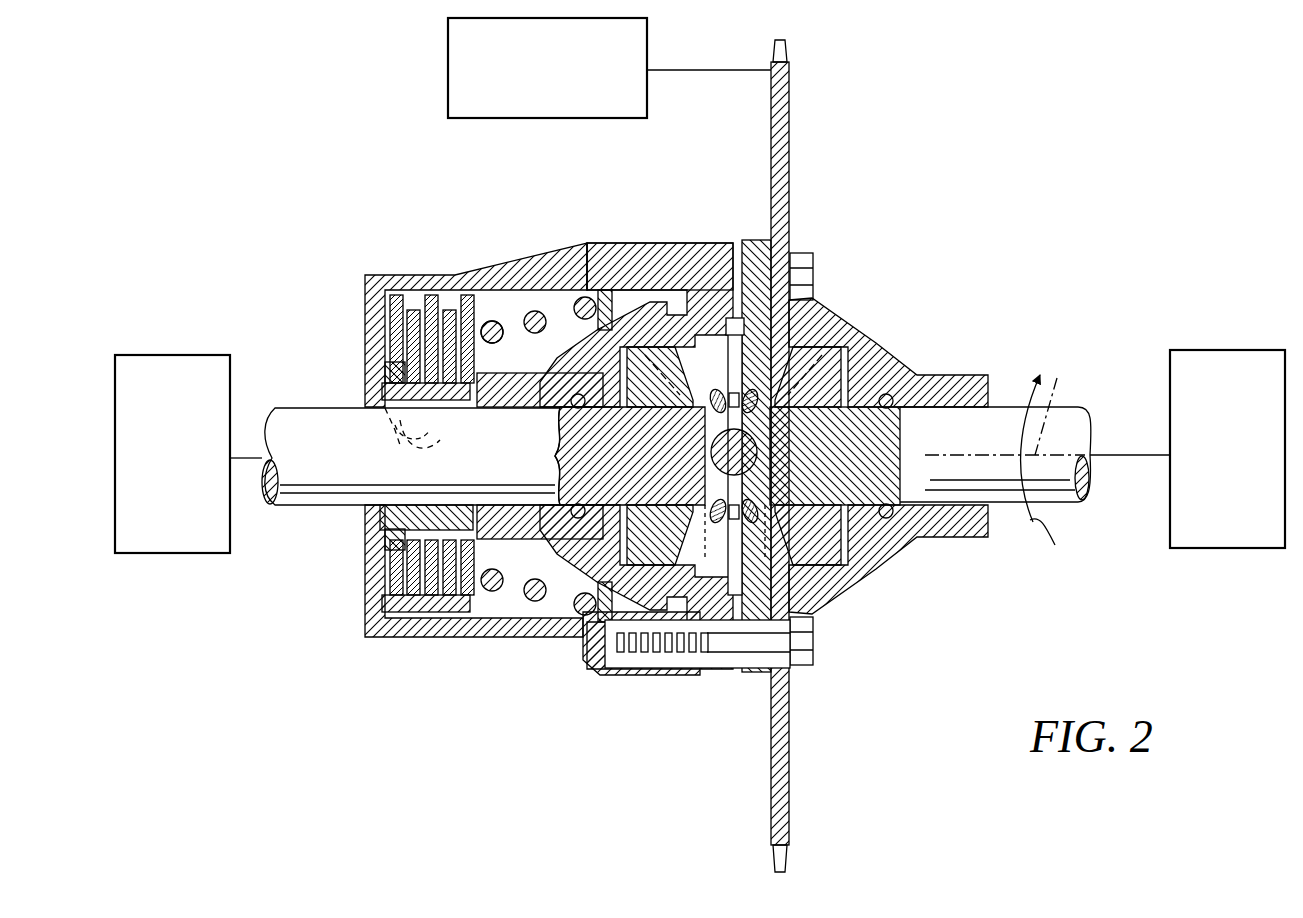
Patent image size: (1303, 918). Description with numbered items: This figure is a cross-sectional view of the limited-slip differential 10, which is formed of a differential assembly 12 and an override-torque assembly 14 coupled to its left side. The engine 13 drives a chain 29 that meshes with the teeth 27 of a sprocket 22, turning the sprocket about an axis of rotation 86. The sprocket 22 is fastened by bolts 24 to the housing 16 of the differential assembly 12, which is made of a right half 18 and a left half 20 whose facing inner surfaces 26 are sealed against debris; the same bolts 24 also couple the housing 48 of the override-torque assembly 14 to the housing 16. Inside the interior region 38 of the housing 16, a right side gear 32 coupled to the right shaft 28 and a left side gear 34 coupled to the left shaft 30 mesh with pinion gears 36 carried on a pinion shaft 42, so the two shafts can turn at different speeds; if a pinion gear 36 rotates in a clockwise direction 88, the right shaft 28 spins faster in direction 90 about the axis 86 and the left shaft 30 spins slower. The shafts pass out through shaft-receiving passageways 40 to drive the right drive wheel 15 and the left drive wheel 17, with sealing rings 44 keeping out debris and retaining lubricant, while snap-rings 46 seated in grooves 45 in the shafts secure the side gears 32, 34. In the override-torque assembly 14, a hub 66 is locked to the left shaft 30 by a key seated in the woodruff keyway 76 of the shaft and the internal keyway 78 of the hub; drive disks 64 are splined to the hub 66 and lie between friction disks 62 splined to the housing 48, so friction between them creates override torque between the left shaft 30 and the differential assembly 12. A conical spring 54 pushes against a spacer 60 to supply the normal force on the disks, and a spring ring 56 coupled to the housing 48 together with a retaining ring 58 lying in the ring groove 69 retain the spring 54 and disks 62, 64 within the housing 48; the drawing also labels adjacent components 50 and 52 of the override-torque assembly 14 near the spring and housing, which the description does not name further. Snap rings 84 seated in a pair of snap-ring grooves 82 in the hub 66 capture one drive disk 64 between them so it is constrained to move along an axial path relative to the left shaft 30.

The limited-slip differential 10 is at (1020, 265).
The differential assembly 12 is at (700, 210).
The engine 13 is at (548, 130).
The override-torque assembly 14 is at (630, 680).
The right drive wheel 15 is at (1211, 345).
The housing 16 is at (880, 352).
The left drive wheel 17 is at (172, 565).
The right half 18 is at (855, 570).
The left half 20 is at (698, 245).
The sprocket 22 is at (786, 176).
The bolts 24 is at (810, 260).
The inner surfaces 26 is at (745, 245).
The teeth 27 is at (788, 52).
The right shaft 28 is at (1060, 410).
The chain 29 is at (710, 68).
The left shaft 30 is at (282, 405).
The right side gear 32 is at (820, 355).
The left side gear 34 is at (660, 245).
The pinion gears 36 is at (800, 345).
The interior region 38 is at (705, 655).
The shaft-receiving passageways 40 is at (575, 445).
The pinion shaft 42 is at (730, 340).
The sealing rings 44 is at (895, 395).
The grooves 45 is at (705, 445).
The snap-rings 46 is at (705, 512).
The housing 48 is at (470, 262).
The ball 50 is at (530, 325).
The clutch housing 52 is at (372, 540).
The conical spring 54 is at (540, 318).
The spring ring 56 is at (612, 275).
The retaining ring 58 is at (585, 295).
The spacer 60 is at (492, 320).
The friction disks 62 is at (430, 600).
The drive disks 64 is at (410, 300).
The hub 66 is at (372, 520).
The ring groove 69 is at (595, 650).
The woodruff keyway 76 is at (440, 442).
The internal keyway 78 is at (380, 425).
The snap-ring grooves 82 is at (385, 385).
The snap rings 84 is at (395, 370).
The axis of rotation 86 is at (1050, 431).
The clockwise direction 88 is at (745, 335).
The direction 90 is at (1059, 539).